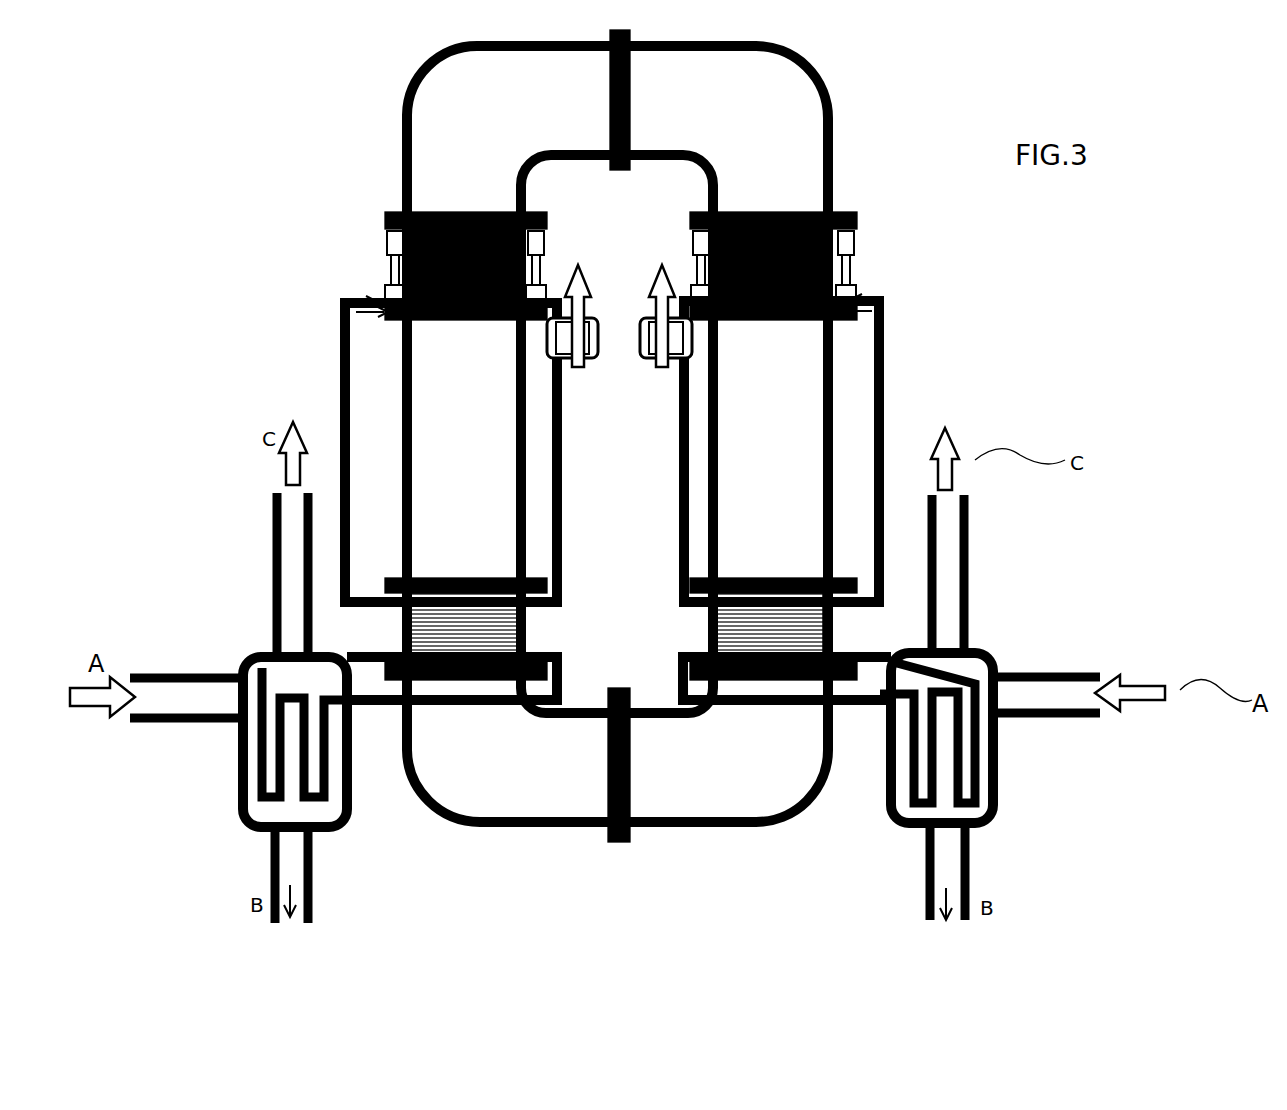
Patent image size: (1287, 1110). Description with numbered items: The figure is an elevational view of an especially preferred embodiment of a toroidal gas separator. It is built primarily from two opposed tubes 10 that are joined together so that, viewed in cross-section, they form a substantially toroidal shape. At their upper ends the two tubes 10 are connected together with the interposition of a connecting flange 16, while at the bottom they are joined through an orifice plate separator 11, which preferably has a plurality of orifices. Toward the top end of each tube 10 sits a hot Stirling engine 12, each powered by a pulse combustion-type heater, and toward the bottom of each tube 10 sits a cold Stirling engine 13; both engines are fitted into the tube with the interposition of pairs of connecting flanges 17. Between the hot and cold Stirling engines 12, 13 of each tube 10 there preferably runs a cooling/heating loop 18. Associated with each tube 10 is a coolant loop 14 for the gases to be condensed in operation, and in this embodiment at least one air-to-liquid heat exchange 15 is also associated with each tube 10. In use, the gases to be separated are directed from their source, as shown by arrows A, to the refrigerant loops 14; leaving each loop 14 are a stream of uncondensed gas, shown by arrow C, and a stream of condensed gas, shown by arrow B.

The tube 10 is at (425, 111).
The orifice plate separator 11 is at (618, 768).
The hot Stirling engine 12 is at (862, 262).
The cold Stirling engine 13 is at (400, 633).
The coolant loop 14 is at (998, 800).
The air-to-liquid heat exchange 15 is at (692, 336).
The connecting flange 16 is at (630, 76).
The connecting flanges 17 is at (386, 210).
The loop 18 is at (336, 360).